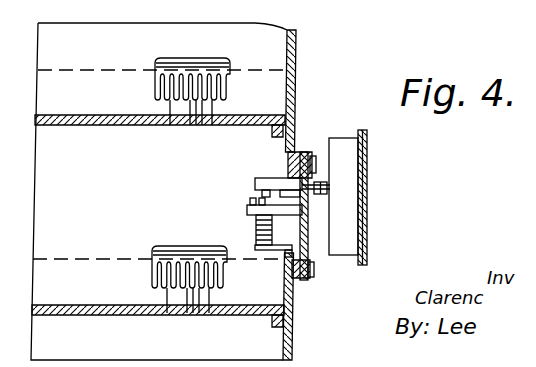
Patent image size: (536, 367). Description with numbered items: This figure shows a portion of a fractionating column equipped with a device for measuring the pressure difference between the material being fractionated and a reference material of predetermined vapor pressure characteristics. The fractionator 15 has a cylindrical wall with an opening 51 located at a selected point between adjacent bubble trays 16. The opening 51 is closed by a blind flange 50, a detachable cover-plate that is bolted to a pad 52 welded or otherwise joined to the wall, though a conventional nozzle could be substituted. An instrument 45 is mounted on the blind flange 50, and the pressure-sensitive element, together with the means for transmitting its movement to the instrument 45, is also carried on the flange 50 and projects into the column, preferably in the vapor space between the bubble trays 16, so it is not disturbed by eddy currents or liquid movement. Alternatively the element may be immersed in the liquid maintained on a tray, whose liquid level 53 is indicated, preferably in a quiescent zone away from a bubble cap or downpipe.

The fractionator 15 is at (297, 45).
The bubble trays 16 is at (107, 101).
The instrument 45 is at (331, 137).
The blind flange 50 is at (306, 250).
The opening 51 is at (288, 232).
The pad 52 is at (301, 283).
The liquid level 53 is at (199, 70).